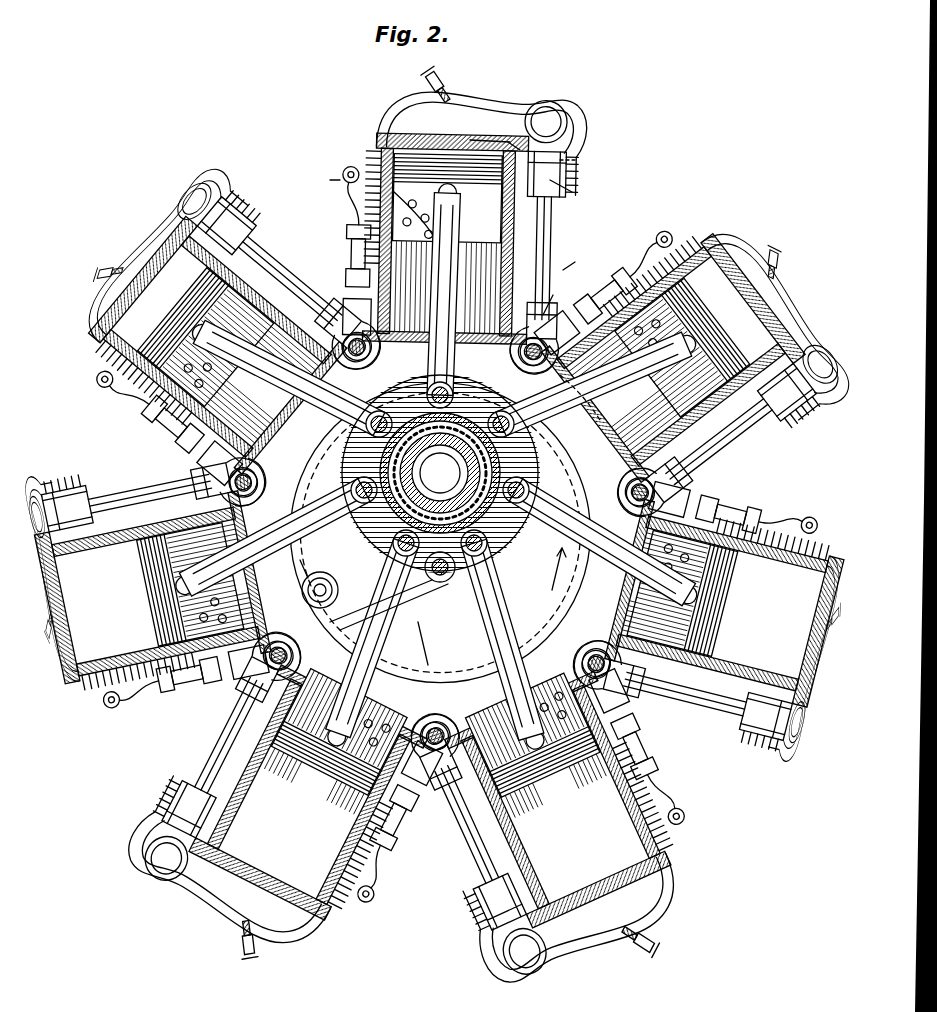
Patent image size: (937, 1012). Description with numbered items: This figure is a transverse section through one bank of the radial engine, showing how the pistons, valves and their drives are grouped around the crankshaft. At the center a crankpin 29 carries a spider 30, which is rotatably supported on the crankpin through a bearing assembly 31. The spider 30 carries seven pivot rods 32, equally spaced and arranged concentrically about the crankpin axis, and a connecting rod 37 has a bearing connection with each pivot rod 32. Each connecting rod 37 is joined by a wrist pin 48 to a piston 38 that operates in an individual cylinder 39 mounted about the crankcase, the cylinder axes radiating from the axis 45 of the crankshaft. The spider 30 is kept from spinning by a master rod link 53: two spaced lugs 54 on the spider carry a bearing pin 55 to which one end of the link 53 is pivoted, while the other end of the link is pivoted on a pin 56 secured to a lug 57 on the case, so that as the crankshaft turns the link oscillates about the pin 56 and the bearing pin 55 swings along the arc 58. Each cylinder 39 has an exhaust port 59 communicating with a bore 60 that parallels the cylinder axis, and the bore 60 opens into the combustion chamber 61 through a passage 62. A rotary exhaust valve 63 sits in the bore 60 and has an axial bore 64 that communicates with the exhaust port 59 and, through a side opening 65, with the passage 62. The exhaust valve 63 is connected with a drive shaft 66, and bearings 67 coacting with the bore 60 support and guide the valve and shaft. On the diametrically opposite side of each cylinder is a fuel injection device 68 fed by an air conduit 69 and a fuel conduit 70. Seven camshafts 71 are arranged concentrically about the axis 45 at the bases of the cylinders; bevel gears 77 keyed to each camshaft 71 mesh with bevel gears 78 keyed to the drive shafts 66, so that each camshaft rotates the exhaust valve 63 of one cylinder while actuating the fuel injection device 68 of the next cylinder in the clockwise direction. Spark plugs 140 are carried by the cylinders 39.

The spark plug 140 is at (446, 80).
The combustion chamber 61 is at (482, 125).
The exhaust port 59 is at (570, 113).
The bore 60 is at (569, 160).
The axial bore 64 is at (589, 158).
The exhaust valve 63 is at (581, 187).
The piston 38 is at (398, 148).
The side opening 65 is at (480, 136).
The passage 62 is at (502, 137).
The cylinder 39 is at (649, 238).
The drive shaft 66 is at (557, 258).
The air conduit 69 is at (346, 226).
The fuel injection device 68 is at (582, 254).
The bearing 67 is at (550, 296).
The bevel gear 78 is at (561, 294).
The fuel conduit 70 is at (325, 175).
The wrist pin 48 is at (448, 201).
The connecting rod 37 is at (452, 270).
The bevel gear 77 is at (421, 334).
The camshaft 71 is at (513, 352).
The pivot rod 32 is at (430, 395).
The crankpin 29 is at (470, 430).
The bearing assembly 31 is at (398, 450).
The spider 30 is at (500, 455).
The axis of the crankshaft 45 is at (532, 569).
The lug 54 is at (456, 570).
The master rod link 53 is at (325, 580).
The pin 56 is at (318, 589).
The lug 57 is at (296, 580).
The bearing pin 55 is at (438, 585).
The arc 58 is at (422, 668).